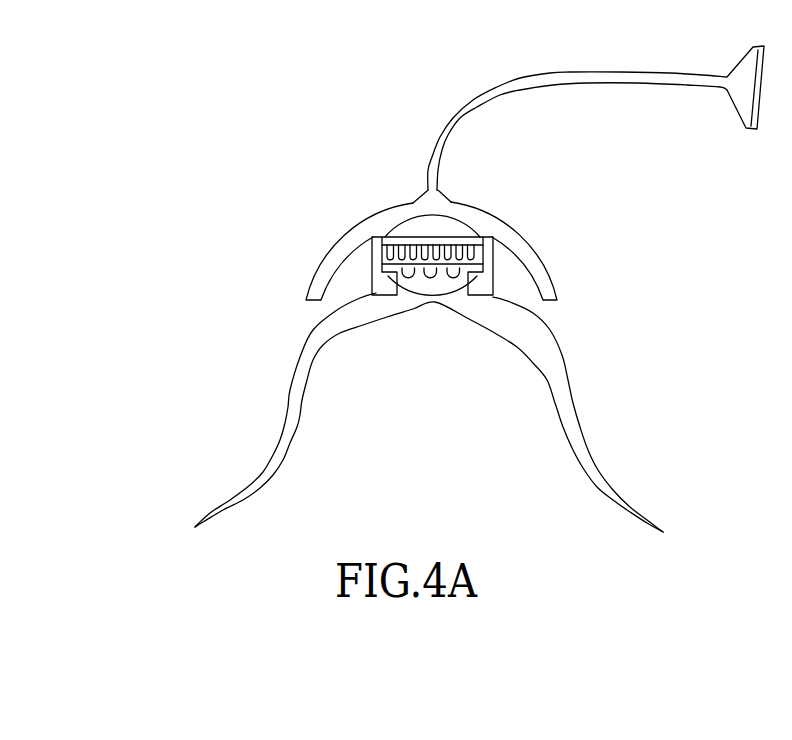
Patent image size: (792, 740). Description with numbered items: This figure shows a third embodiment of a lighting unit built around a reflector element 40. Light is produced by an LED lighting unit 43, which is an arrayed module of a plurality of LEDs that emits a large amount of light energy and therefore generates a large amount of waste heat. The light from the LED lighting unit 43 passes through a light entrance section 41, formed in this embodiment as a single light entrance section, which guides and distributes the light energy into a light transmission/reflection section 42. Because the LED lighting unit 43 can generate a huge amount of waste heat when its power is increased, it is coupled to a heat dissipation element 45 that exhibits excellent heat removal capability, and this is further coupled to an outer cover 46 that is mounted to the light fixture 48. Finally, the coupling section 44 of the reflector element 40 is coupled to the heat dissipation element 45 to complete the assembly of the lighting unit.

The reflector element 40 is at (310, 367).
The light entrance section 41 is at (410, 292).
The light transmission/reflection section 42 is at (408, 310).
The LED lighting unit 43 is at (465, 268).
The coupling section 44 is at (372, 293).
The heat dissipation element 45 is at (416, 265).
The outer cover 46 is at (397, 215).
The light fixture 48 is at (703, 84).